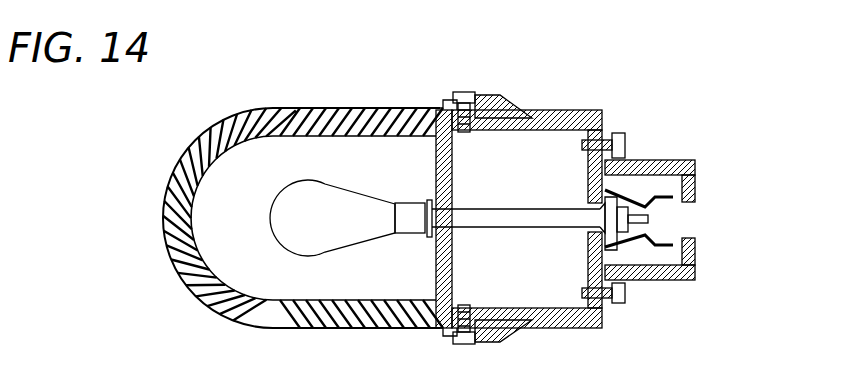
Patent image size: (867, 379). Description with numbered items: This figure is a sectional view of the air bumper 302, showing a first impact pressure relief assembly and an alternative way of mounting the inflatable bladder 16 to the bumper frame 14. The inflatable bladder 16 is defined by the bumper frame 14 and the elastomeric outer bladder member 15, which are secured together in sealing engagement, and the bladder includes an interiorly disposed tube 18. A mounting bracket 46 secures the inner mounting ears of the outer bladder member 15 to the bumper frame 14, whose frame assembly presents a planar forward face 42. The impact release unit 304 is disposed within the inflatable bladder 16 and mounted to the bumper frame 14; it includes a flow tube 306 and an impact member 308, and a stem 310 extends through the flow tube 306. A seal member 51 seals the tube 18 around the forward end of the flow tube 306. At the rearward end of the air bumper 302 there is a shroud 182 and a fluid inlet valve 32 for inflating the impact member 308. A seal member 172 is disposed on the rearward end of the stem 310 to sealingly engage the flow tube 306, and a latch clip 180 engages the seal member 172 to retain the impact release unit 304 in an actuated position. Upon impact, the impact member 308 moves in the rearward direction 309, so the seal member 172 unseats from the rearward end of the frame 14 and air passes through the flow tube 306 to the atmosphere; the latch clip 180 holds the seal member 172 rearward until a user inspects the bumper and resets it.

The bumper frame 14 is at (603, 127).
The outer bladder member 15 is at (180, 237).
The inflatable bladder 16 is at (227, 113).
The tube 18 is at (220, 150).
The fluid inlet valve 32 is at (650, 219).
The forward face 42 is at (418, 110).
The mounting bracket 46 is at (497, 100).
The seal member 51 is at (447, 222).
The seal member 172 is at (616, 242).
The latch clip 180 is at (630, 193).
The shroud 182 is at (695, 183).
The air bumper 302 is at (218, 107).
The impact release unit 304 is at (282, 245).
The flow tube 306 is at (492, 227).
The impact member 308 is at (335, 235).
The rearward direction 309 is at (417, 170).
The stem 310 is at (412, 225).